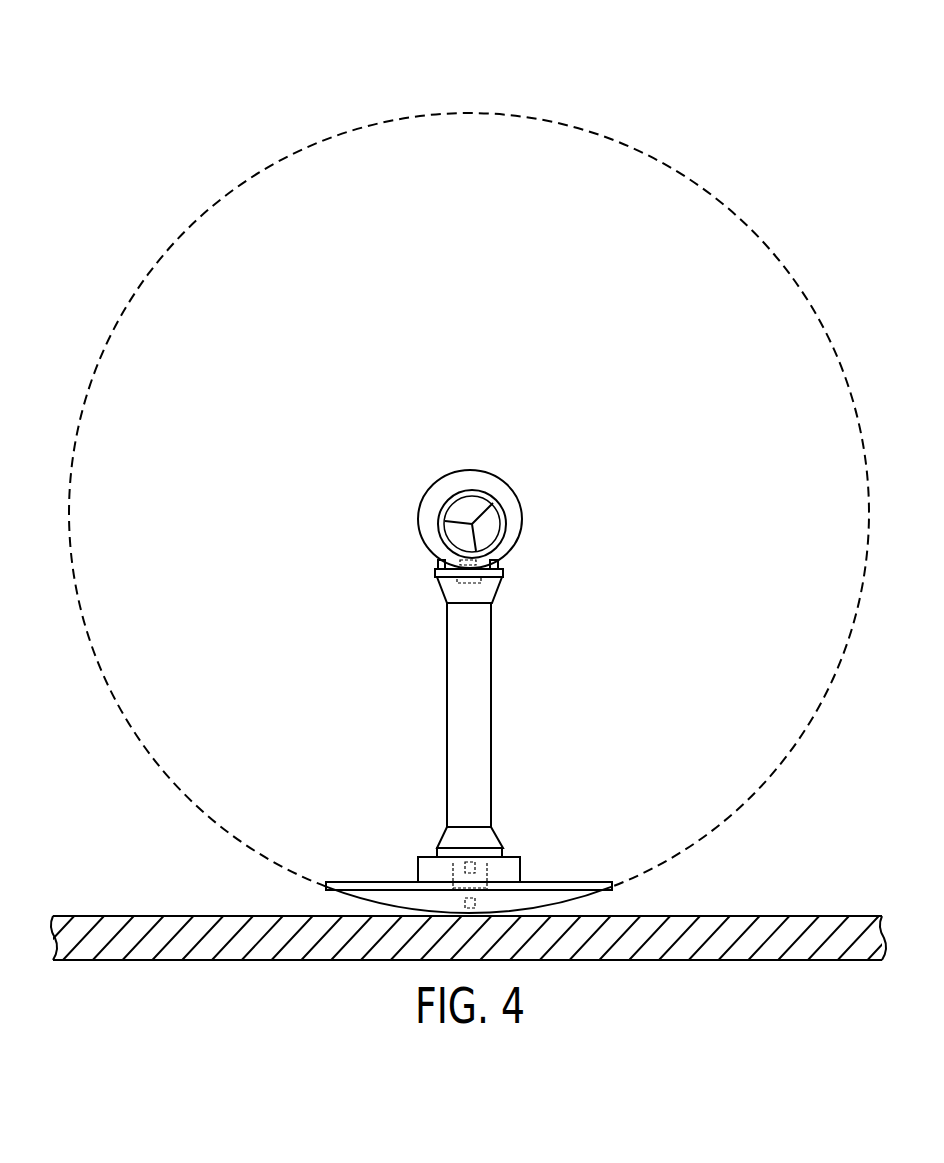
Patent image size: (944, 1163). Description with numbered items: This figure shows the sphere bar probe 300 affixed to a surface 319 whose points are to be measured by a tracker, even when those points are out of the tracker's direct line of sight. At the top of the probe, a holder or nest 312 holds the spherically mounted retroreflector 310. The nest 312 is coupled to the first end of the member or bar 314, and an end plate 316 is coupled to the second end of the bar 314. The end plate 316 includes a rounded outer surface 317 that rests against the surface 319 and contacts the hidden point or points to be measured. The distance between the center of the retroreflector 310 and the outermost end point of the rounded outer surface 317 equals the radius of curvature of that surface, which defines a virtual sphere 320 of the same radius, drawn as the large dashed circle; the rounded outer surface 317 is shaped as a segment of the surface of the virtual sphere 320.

The sphere bar probe 300 is at (405, 398).
The spherically mounted retroreflector 310 is at (430, 523).
The holder or nest 312 is at (450, 589).
The member or bar 314 is at (457, 712).
The end plate 316 is at (352, 887).
The rounded outer surface 317 is at (562, 898).
The surface 319 is at (152, 927).
The virtual sphere 320 is at (360, 128).